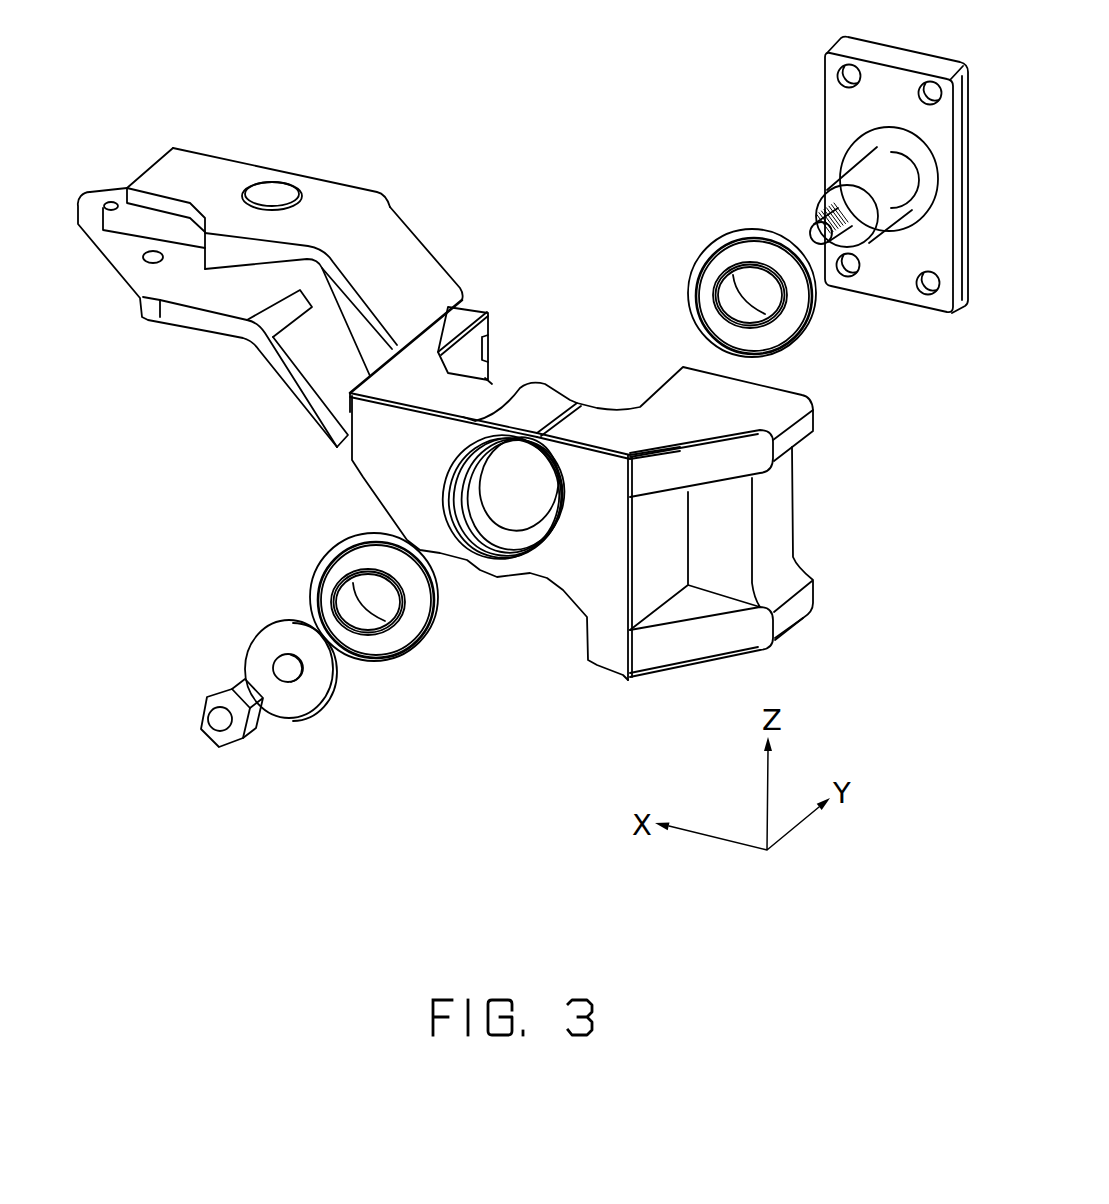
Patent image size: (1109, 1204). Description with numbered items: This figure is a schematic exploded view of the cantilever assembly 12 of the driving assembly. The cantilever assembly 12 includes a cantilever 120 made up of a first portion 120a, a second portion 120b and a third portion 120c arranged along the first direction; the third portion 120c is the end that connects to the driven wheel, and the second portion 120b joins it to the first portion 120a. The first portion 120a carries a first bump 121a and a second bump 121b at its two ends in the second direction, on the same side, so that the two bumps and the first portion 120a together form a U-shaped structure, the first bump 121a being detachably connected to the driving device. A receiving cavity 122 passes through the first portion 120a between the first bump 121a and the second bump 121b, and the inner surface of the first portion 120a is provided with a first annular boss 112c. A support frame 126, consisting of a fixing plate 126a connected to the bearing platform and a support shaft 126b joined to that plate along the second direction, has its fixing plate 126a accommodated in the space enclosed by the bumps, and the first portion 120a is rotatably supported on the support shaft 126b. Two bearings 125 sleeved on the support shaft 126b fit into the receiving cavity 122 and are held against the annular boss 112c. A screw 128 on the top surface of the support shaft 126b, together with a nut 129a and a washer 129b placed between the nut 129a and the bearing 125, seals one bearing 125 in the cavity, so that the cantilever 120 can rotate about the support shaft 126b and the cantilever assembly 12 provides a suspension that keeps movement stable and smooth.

The cantilever assembly 12 is at (545, 65).
The cantilever 120 is at (442, 126).
The first portion 120a is at (432, 400).
The second portion 120b is at (395, 247).
The third portion 120c is at (322, 197).
The first bump 121a is at (797, 433).
The second bump 121b is at (475, 313).
The receiving cavity 122 is at (510, 462).
The mounting hole 112c is at (473, 482).
The bearing 125 is at (403, 638).
The support frame 126 is at (721, 62).
The fixing plate 126a is at (840, 97).
The support shaft 126b is at (870, 180).
The screw 128 is at (822, 205).
The nut 129a is at (253, 736).
The washer 129b is at (317, 693).